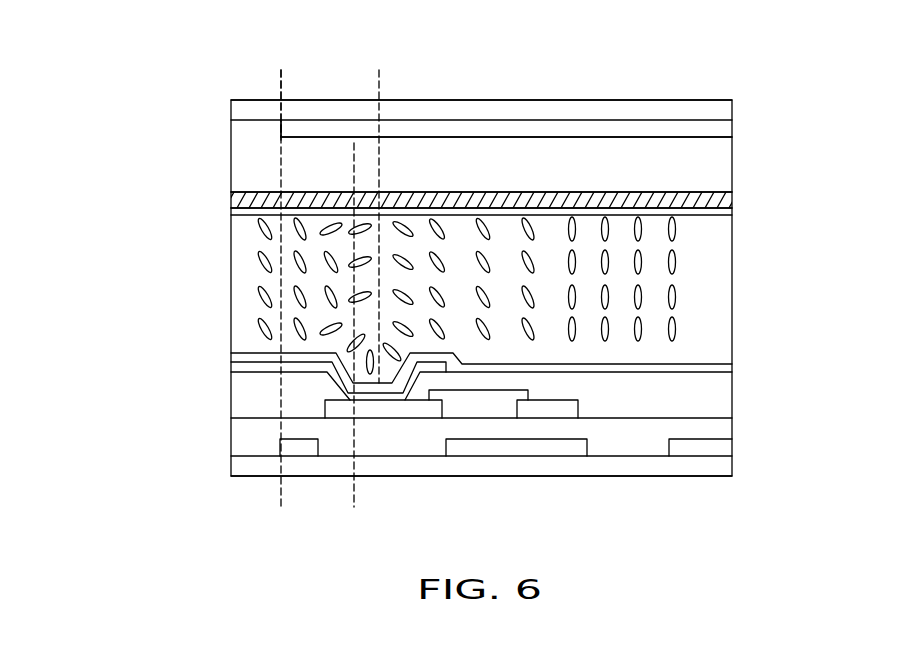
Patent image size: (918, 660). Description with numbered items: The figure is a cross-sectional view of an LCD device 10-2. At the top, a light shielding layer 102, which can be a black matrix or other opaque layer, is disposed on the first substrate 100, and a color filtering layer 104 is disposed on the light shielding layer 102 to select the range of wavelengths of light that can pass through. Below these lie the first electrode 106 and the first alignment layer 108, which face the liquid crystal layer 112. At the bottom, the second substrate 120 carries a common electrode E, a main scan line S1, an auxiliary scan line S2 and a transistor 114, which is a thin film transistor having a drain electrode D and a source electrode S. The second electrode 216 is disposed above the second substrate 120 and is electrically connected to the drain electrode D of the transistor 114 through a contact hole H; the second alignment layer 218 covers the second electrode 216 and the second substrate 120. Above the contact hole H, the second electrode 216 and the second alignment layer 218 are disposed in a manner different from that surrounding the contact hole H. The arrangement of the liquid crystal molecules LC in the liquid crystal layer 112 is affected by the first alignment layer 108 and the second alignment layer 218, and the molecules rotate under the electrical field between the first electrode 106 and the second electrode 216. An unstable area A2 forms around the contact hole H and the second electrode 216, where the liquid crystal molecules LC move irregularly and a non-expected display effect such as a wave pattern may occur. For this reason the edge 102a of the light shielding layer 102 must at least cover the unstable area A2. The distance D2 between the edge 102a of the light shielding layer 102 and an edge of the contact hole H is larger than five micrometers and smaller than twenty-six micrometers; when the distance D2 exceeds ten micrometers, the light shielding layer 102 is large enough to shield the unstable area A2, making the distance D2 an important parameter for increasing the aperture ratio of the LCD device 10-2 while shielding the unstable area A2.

The LCD device 10-2 is at (100, 72).
The first substrate 100 is at (724, 110).
The light shielding layer 102 is at (725, 130).
The edge of the light shielding layer 102a is at (281, 130).
The color filtering layer 104 is at (715, 167).
The first electrode 106 is at (725, 200).
The first alignment layer 108 is at (725, 213).
The liquid crystal layer 112 is at (481, 295).
The liquid crystal molecules LC is at (266, 250).
The contact hole H is at (375, 332).
The second electrode 216 is at (232, 367).
The second alignment layer 218 is at (722, 370).
The second substrate 120 is at (735, 373).
The common electrode E is at (290, 448).
The drain electrode D is at (382, 408).
The main scan line S1 is at (518, 447).
The source electrode S is at (540, 408).
The transistor 114 is at (546, 393).
The auxiliary scan line S2 is at (703, 447).
The distance D2 is at (342, 502).
The unstable area A2 is at (367, 80).